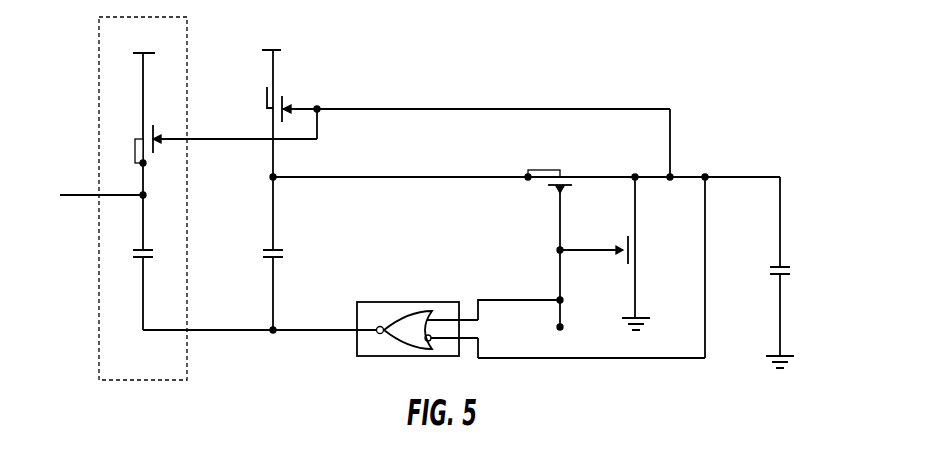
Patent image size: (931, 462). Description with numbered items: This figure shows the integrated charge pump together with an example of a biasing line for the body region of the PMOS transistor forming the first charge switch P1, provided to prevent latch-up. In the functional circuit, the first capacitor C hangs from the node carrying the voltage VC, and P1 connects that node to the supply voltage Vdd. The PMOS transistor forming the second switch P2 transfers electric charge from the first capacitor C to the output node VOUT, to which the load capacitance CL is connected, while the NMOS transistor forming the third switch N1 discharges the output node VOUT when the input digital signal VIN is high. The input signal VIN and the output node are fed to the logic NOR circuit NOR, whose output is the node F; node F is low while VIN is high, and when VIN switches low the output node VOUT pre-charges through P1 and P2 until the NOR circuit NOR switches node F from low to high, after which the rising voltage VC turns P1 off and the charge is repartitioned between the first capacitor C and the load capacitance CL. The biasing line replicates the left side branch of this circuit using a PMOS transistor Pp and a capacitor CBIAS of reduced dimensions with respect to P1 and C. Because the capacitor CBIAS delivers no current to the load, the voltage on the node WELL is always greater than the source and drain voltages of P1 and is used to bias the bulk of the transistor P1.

The supply voltage Vdd is at (204, 34).
The PMOS transistor of the biasing line Pp is at (214, 151).
The well node WELL is at (154, 130).
The bias capacitor CBIAS is at (180, 280).
The node F is at (259, 347).
The first charge switch P1 is at (471, 150).
The voltage on the first capacitor VC is at (525, 160).
The first capacitor C is at (284, 282).
The second switch for transferring electric charge P2 is at (541, 248).
The third switch for discharging the output node N1 is at (603, 252).
The output node VOUT is at (624, 247).
The load capacitance CL is at (793, 272).
The input digital signal VIN is at (541, 327).
The NOR circuit NOR is at (417, 314).